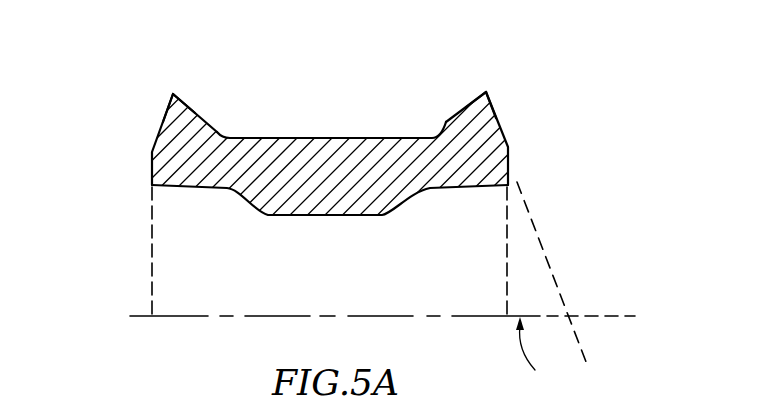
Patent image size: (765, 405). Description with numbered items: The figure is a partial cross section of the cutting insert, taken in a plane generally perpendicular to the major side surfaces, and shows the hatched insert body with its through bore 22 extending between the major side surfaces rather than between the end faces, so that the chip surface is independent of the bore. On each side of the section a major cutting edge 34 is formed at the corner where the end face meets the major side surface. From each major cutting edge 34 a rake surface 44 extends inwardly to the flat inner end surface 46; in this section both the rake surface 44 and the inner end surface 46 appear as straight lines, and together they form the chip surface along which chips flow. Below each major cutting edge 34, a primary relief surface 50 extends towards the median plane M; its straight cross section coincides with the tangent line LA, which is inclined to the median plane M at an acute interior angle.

The through bore 22 is at (202, 192).
The major cutting edge 34 is at (173, 93).
The rake surface 44 is at (192, 102).
The inner end surface 46 is at (305, 137).
The primary relief surface 50 is at (162, 122).
The line tangent to the primary relief surface LA is at (537, 232).
The median plane M is at (617, 313).